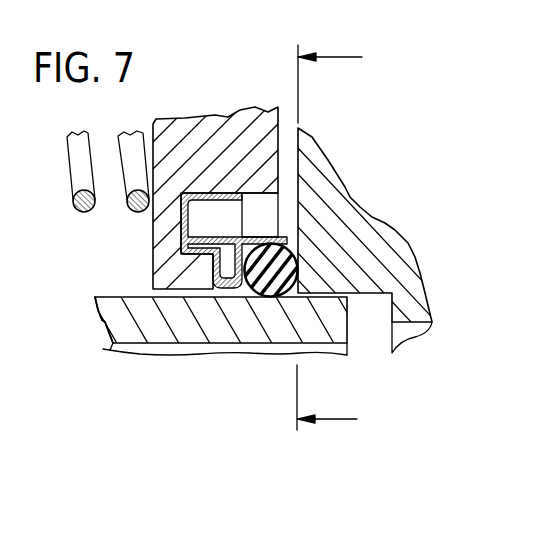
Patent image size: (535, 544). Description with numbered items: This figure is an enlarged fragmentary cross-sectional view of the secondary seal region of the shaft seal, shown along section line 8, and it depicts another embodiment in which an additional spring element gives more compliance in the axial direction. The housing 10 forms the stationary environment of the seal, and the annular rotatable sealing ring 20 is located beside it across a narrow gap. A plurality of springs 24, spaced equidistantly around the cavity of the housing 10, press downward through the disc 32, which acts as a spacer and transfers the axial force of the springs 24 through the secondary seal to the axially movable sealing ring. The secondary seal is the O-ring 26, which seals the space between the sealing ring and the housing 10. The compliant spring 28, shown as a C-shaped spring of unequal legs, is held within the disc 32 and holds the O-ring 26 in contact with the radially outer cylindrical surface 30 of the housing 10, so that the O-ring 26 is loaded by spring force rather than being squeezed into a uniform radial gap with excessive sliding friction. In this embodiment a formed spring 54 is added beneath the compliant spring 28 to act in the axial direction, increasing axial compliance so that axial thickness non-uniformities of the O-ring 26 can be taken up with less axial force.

The section line 8- 8 is at (329, 241).
The housing 10 is at (133, 300).
The rotatable sealing ring 20 is at (343, 213).
The springs 24 is at (90, 212).
The O-ring 26 is at (272, 237).
The compliant spring 28 is at (215, 236).
The radially outer cylindrical surface 30 is at (100, 296).
The disc 32 is at (226, 116).
The formed spring 54 is at (231, 294).